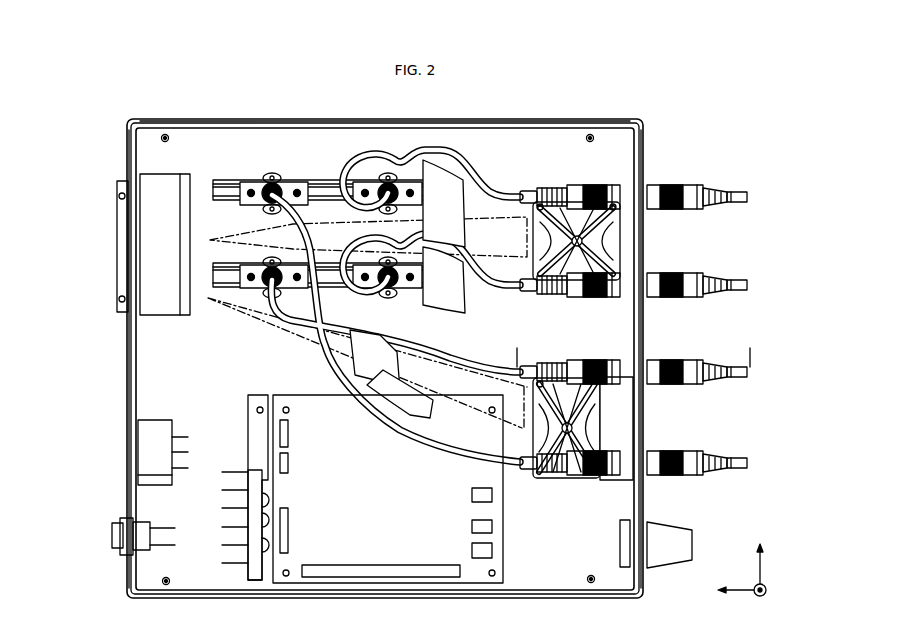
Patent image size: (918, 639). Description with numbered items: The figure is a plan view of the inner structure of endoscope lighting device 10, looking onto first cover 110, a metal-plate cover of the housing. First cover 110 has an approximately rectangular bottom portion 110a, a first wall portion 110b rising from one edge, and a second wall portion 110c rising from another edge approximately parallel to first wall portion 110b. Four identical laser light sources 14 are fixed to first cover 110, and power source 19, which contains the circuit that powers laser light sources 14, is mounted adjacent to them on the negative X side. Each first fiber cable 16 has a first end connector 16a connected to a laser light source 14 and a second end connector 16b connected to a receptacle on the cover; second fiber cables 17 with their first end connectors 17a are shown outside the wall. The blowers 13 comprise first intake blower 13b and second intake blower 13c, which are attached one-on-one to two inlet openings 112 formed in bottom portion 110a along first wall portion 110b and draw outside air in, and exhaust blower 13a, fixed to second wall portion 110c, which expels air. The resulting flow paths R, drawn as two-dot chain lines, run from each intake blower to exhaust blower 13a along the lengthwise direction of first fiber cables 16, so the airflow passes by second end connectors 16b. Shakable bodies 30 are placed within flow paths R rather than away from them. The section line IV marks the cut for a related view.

The endoscope lighting device 10 is at (727, 113).
The first cover 110 is at (555, 137).
The bottom portion 110a is at (485, 134).
The first wall portion 110b is at (644, 130).
The second wall portion 110c is at (127, 148).
The blowers 13 is at (386, 315).
The exhaust blower 13a is at (163, 316).
The first intake blower 13b is at (552, 196).
The second intake blower 13c is at (531, 443).
The laser light source 14 is at (283, 188).
The first fiber cable 16 is at (477, 188).
The first end connector 16a is at (263, 181).
The second end connector 16b is at (582, 190).
The second fiber cable 17 is at (737, 190).
The first end connector 17a is at (684, 186).
The inlet opening 112 is at (547, 291).
The power source 19 is at (371, 523).
The shakable body 30 is at (437, 177).
The flow path R is at (206, 240).
The section line IV is at (632, 349).